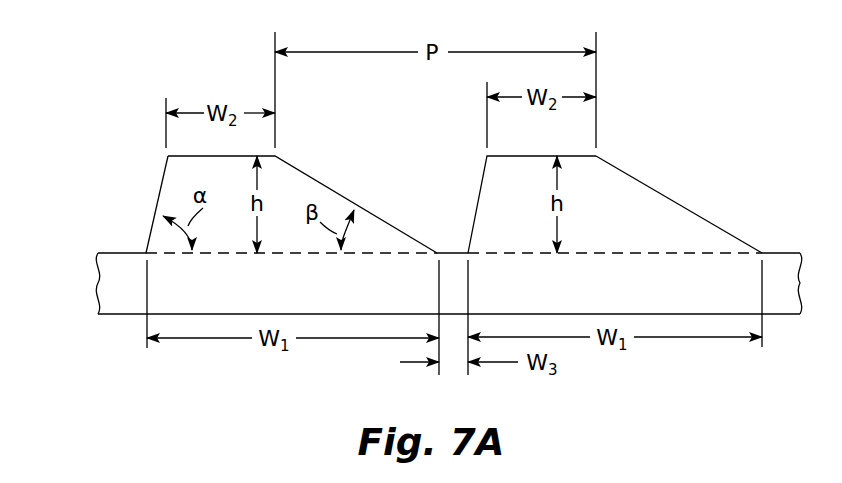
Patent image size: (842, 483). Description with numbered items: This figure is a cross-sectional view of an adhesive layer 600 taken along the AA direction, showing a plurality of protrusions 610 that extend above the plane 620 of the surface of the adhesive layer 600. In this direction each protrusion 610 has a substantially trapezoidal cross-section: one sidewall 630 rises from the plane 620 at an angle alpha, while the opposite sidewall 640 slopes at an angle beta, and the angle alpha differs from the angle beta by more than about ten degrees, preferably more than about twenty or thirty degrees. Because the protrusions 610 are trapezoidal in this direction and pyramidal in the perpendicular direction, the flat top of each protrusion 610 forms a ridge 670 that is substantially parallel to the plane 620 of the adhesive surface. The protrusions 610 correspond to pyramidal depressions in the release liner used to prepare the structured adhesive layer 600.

The adhesive layer 600 is at (106, 298).
The pyramidal protrusions 610 is at (657, 220).
The plane of the adhesive layer 620 is at (120, 256).
The sidewall 630 is at (160, 183).
The sidewall 640 is at (330, 186).
The ridge 670 is at (512, 156).